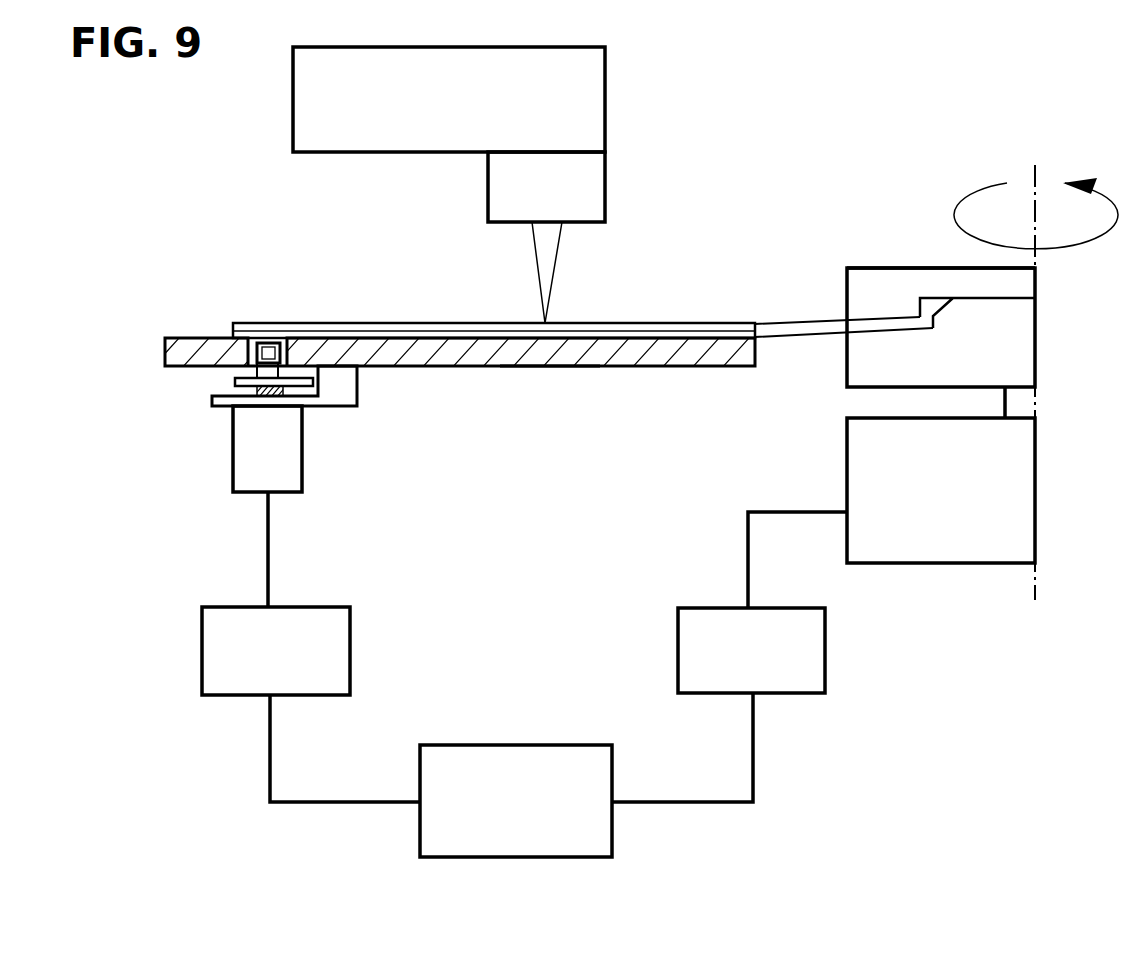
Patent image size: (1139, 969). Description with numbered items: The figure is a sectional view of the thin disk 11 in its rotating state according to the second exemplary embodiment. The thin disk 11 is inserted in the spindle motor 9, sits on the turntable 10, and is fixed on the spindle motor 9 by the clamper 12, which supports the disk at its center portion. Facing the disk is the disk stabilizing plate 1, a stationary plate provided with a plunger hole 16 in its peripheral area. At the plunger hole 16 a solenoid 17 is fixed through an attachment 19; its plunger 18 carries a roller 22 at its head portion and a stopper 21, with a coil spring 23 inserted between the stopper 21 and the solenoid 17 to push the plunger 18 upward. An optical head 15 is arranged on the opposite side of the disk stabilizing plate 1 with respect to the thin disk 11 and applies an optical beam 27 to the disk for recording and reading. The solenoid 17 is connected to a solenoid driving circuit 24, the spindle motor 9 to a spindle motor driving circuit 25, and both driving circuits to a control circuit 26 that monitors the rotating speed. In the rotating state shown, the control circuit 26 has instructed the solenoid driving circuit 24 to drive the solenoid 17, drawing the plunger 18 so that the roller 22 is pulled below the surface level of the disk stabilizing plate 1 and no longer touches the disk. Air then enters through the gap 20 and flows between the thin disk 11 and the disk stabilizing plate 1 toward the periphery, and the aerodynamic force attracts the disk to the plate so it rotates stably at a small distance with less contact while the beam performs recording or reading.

The disk stabilizing plate 1 is at (558, 367).
The spindle motor 9 is at (930, 515).
The turntable 10 is at (910, 363).
The thin disk 11 is at (700, 313).
The clamper 12 is at (940, 266).
The optical head 15 is at (497, 134).
The plunger hole 16 is at (244, 322).
The solenoid 17 is at (302, 455).
The plunger 18 is at (250, 362).
The attachment 19 is at (357, 408).
The gap 20 is at (800, 355).
The stopper 21 is at (232, 379).
The roller 22 is at (232, 330).
The coil spring 23 is at (218, 398).
The solenoid driving circuit 24 is at (282, 672).
The spindle motor driving circuit 25 is at (717, 663).
The control circuit 26 is at (497, 778).
The optical beam 27 is at (537, 257).